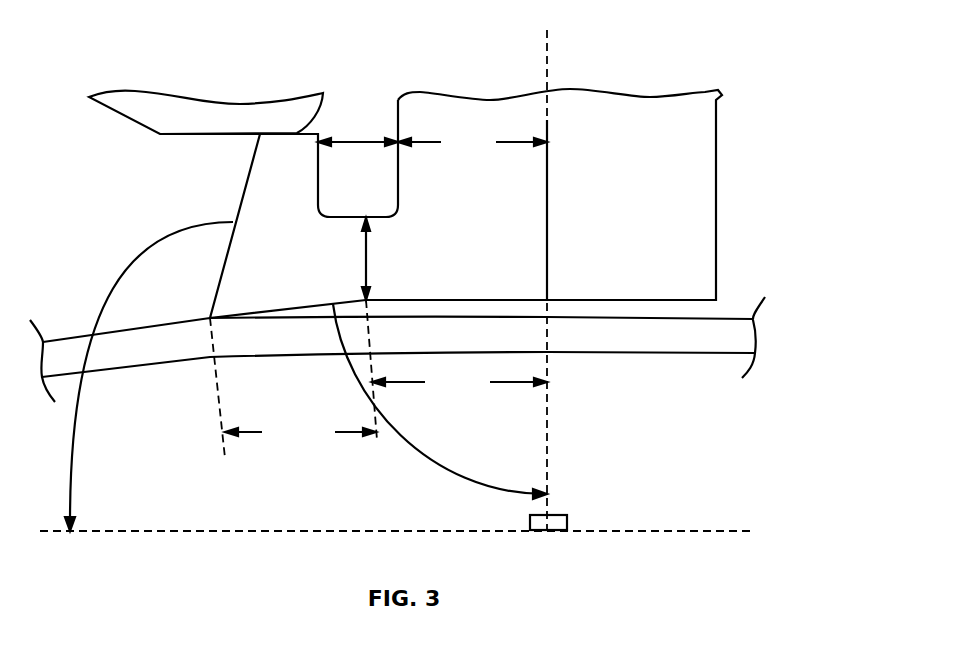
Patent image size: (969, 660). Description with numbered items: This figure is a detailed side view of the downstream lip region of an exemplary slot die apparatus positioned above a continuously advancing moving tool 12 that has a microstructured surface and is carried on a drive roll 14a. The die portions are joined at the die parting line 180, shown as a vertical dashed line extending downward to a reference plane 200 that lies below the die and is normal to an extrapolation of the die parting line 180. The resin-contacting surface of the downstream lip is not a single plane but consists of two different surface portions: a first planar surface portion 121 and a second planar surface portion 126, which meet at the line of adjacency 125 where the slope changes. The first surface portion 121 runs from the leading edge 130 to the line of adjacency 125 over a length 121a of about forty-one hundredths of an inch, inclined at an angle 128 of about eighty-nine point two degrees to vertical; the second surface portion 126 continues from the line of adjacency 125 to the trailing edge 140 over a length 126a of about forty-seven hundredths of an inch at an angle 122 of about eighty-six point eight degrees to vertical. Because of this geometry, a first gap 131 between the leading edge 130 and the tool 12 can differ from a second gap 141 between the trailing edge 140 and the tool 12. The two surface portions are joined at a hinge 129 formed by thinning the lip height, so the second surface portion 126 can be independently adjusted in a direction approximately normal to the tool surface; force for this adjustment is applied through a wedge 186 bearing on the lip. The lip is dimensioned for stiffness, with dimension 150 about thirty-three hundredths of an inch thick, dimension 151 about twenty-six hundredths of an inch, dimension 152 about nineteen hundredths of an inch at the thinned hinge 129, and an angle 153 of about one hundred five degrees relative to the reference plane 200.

The moving tool 12 is at (144, 368).
The drive roll 14a is at (292, 500).
The first planar surface portion 121 is at (443, 299).
The length of first surface portion 121a is at (459, 380).
The angle of second surface portion 122 is at (450, 470).
The line of adjacency 125 is at (372, 295).
The second planar surface portion 126 is at (265, 309).
The length of second surface portion 126a is at (300, 430).
The angle of first surface portion 128 is at (545, 342).
The hinge 129 is at (355, 217).
The leading edge 130 is at (539, 297).
The first gap 131 is at (540, 309).
The trailing edge 140 is at (207, 316).
The second gap 141 is at (207, 320).
The dimension 150 is at (472, 140).
The dimension 151 is at (358, 142).
The dimension 152 is at (362, 258).
The angle 153 is at (146, 248).
The die parting line 180 is at (548, 121).
The wedge 186 is at (140, 127).
The reference plane 200 is at (700, 528).